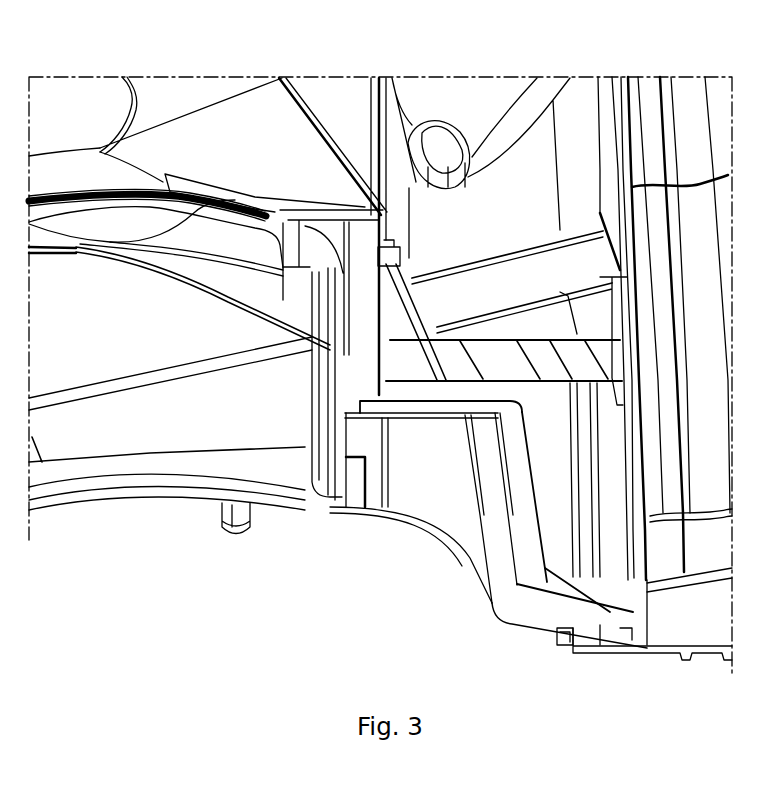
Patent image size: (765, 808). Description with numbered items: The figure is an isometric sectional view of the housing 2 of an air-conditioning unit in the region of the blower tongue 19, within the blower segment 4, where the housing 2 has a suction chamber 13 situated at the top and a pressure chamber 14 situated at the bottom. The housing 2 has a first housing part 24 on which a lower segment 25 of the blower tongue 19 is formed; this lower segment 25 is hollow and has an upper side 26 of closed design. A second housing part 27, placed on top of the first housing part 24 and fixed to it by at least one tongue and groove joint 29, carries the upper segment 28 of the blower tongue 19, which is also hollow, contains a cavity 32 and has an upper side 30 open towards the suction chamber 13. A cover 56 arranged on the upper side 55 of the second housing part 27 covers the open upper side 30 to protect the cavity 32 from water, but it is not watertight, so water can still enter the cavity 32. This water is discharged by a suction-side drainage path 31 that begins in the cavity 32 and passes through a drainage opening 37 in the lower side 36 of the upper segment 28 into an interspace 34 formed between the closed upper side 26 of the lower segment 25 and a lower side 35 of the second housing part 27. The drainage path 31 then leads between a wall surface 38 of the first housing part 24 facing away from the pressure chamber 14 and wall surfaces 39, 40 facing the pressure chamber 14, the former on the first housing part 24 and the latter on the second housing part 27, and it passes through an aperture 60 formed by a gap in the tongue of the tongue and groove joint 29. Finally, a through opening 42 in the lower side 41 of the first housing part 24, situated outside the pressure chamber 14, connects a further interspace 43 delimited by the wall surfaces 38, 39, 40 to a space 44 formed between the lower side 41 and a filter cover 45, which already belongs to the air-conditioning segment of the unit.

The housing 2 is at (236, 566).
The blower segment 4 is at (325, 548).
The suction chamber 13 is at (269, 149).
The pressure chamber 14 is at (94, 351).
The blower tongue 19 is at (300, 377).
The first housing part 24 is at (350, 479).
The lower segment 25 is at (322, 430).
The upper side 26 is at (458, 410).
The second housing part 27 is at (348, 272).
The upper segment 28 is at (300, 338).
The tongue and groove joint 29 is at (506, 389).
The upper side 30 is at (333, 226).
The suction-side drainage path 31 is at (520, 600).
The cavity 32 is at (372, 296).
The interspace 34 is at (418, 403).
The lower side 35 is at (432, 378).
The lower side 36 is at (378, 372).
The drainage opening 37 is at (373, 402).
The wall surface 38 is at (530, 548).
The wall surface 39 is at (625, 532).
The wall surface 40 is at (552, 385).
The lower side 41 is at (543, 630).
The through opening 42 is at (650, 607).
The interspace 43 is at (561, 508).
The space 44 is at (627, 640).
The filter cover 45 is at (693, 655).
The upper side 55 is at (180, 203).
The cover 56 is at (210, 95).
The aperture 60 is at (478, 417).